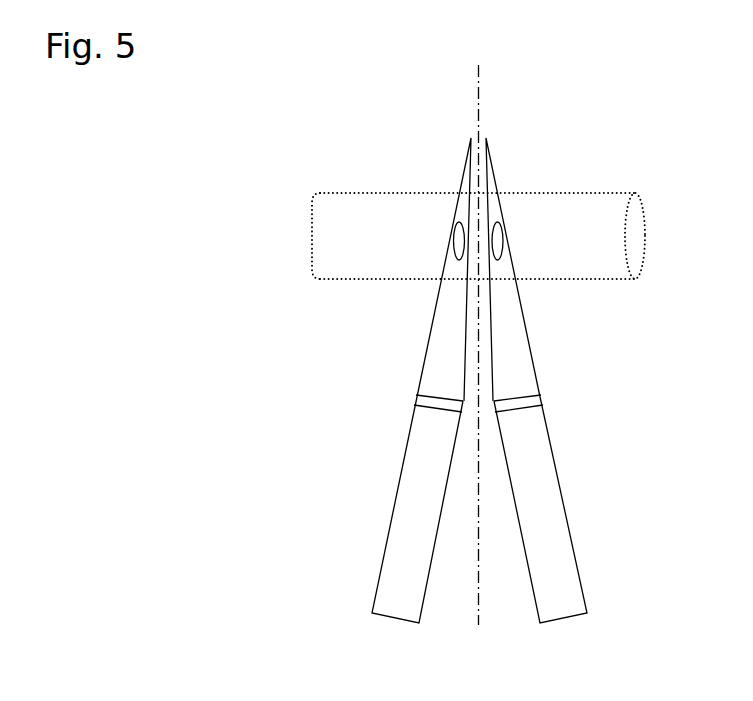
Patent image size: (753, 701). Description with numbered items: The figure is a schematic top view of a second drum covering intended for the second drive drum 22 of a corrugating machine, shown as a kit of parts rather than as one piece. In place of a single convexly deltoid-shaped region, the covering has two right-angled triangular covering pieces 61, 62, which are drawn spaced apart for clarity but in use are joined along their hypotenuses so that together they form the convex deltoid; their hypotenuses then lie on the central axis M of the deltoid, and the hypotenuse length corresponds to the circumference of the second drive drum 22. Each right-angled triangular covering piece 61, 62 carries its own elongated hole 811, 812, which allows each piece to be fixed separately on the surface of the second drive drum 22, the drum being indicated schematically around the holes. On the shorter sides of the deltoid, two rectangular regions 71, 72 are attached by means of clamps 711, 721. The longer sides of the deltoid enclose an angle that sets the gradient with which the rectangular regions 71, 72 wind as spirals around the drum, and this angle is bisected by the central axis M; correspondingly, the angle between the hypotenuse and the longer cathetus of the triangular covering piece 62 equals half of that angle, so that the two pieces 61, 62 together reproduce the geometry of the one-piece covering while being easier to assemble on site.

The central axis M is at (480, 100).
The second drive drum 22 is at (335, 241).
The elongated hole 811 is at (457, 242).
The elongated hole 812 is at (500, 242).
The right-angled triangular covering piece 61 is at (443, 330).
The right-angled triangular covering piece 62 is at (515, 330).
The clamp 711 is at (427, 398).
The clamp 721 is at (533, 399).
The rectangular region 71 is at (408, 510).
The rectangular region 72 is at (552, 511).